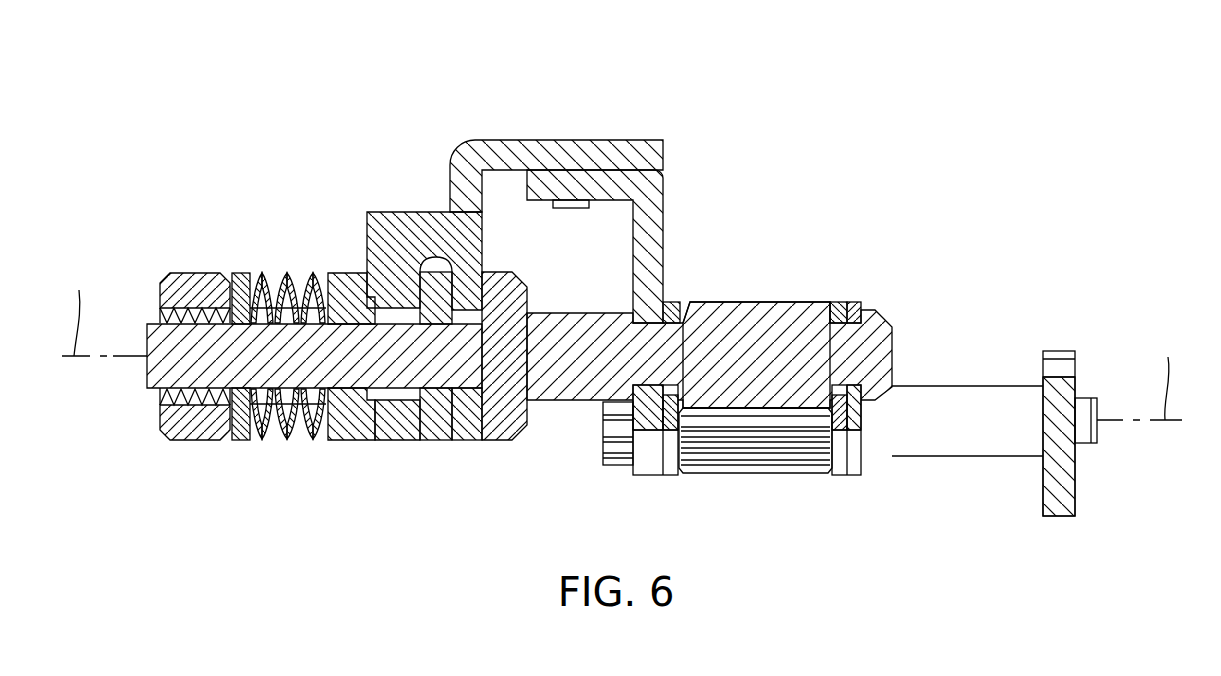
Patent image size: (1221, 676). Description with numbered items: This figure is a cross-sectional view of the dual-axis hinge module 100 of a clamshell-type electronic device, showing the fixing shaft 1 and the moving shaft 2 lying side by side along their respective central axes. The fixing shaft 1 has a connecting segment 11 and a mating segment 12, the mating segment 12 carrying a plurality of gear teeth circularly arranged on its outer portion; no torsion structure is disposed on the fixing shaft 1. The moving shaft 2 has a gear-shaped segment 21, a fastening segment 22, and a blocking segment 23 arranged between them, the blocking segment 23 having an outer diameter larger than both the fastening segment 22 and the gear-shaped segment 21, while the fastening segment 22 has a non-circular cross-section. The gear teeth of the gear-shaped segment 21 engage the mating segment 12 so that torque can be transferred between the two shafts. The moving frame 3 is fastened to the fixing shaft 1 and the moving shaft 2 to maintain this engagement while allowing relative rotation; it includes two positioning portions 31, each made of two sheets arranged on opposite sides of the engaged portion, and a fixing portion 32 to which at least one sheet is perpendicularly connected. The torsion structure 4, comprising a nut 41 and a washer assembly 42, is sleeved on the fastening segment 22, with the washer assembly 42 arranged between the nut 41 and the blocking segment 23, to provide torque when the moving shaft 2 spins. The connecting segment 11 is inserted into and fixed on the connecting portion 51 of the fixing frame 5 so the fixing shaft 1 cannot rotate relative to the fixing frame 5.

The dual-axis hinge module 100 is at (1085, 65).
The fixing shaft 1 is at (823, 467).
The connecting segment 11 is at (955, 420).
The mating segment 12 is at (758, 448).
The moving shaft 2 is at (519, 364).
The gear-shaped segment 21 is at (783, 350).
The fastening segment 22 is at (378, 373).
The blocking segment 23 is at (493, 420).
The moving frame 3 is at (556, 188).
The positioning portion 31 is at (673, 295).
The fixing portion 32 is at (522, 160).
The torsion structure 4 is at (243, 292).
The nut 41 is at (197, 283).
The washer assembly 42 is at (279, 310).
The fixing frame 5 is at (1067, 369).
The connecting portion 51 is at (1060, 368).